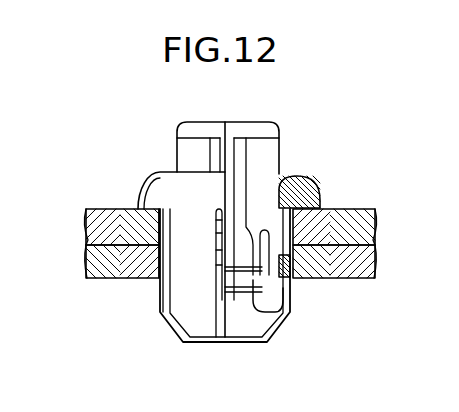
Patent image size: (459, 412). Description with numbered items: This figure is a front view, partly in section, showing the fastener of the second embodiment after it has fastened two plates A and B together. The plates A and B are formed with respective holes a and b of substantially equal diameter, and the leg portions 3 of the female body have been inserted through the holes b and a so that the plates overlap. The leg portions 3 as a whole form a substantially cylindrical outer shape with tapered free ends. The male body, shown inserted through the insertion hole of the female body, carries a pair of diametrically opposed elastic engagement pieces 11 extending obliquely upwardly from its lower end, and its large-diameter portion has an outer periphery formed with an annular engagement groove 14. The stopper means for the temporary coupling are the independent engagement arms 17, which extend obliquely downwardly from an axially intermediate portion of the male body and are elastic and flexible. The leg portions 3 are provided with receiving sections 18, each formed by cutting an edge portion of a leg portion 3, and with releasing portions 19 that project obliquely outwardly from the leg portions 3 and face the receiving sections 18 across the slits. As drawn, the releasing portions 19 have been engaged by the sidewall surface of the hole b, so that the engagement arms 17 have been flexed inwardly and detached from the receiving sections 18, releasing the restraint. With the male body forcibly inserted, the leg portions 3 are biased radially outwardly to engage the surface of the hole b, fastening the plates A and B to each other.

The leg portions 3 is at (167, 298).
The elastic engagement pieces 11 is at (218, 283).
The annular engagement groove 14 is at (238, 283).
The engagement arms 17 is at (305, 211).
The receiving sections 18 is at (290, 305).
The releasing portions 19 is at (317, 278).
The hole a is at (137, 210).
The hole b is at (150, 270).
The plate A is at (88, 214).
The plate B is at (90, 258).